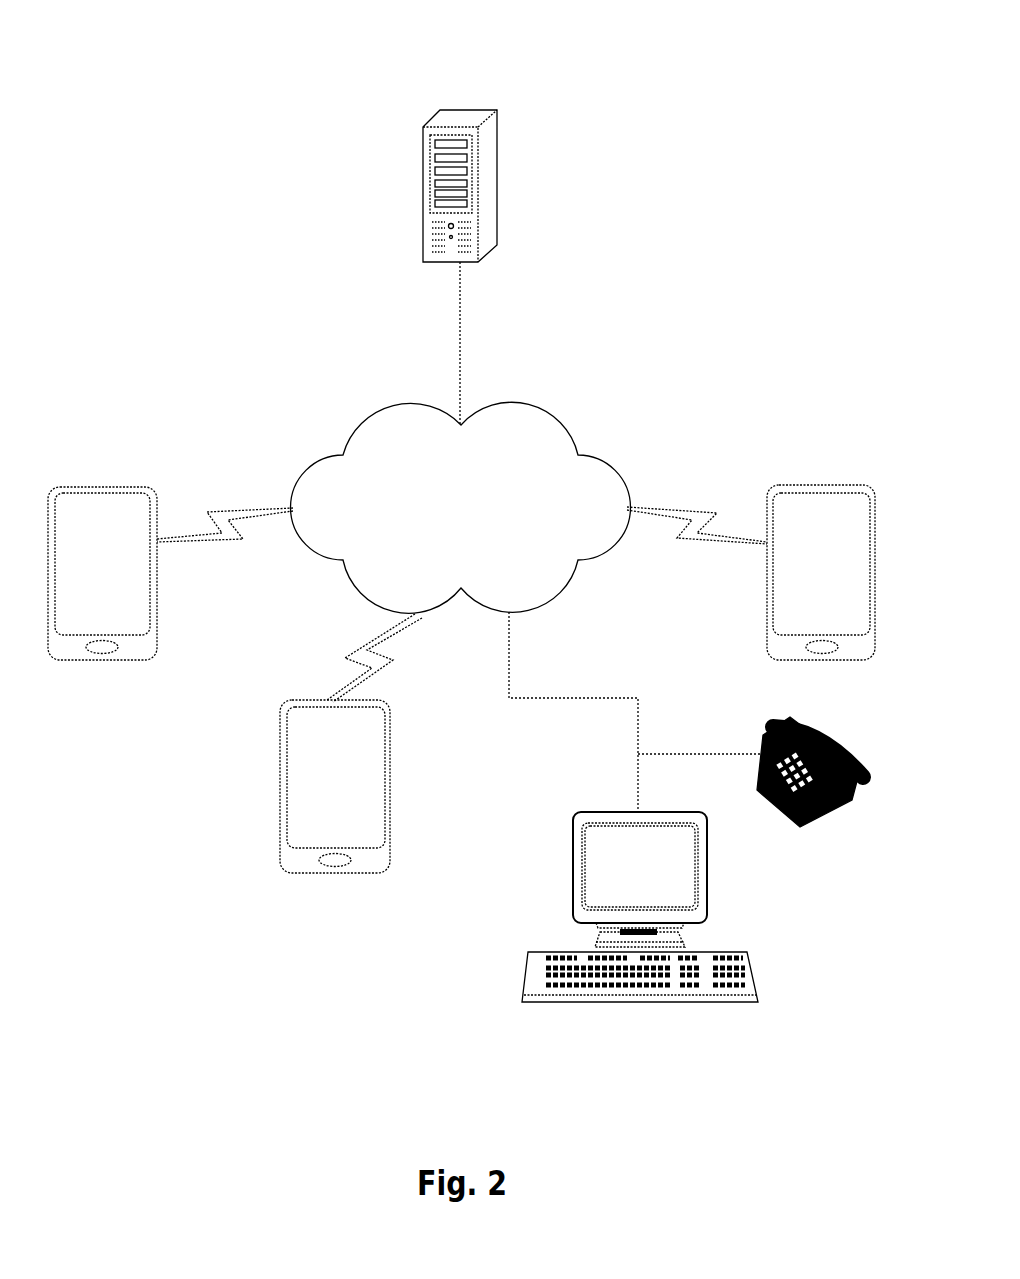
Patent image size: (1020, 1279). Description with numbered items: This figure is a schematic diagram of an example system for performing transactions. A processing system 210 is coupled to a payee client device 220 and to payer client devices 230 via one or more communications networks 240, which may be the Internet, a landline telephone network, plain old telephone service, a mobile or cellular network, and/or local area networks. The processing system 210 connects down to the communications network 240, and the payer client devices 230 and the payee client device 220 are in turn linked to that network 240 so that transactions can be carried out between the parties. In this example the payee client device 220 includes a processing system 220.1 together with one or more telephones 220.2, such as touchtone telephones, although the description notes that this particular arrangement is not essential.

The processing system 210 is at (460, 118).
The communications network 240 is at (461, 507).
The payer client device 230 is at (123, 583).
The payee client device 220 is at (843, 583).
The processing system 220.1 is at (673, 881).
The telephone 220.2 is at (802, 827).